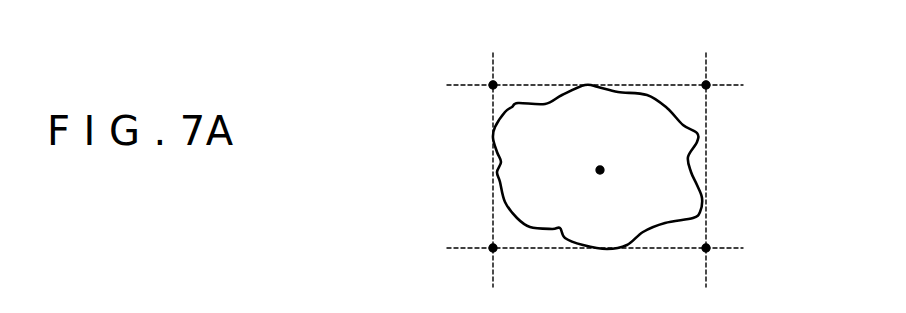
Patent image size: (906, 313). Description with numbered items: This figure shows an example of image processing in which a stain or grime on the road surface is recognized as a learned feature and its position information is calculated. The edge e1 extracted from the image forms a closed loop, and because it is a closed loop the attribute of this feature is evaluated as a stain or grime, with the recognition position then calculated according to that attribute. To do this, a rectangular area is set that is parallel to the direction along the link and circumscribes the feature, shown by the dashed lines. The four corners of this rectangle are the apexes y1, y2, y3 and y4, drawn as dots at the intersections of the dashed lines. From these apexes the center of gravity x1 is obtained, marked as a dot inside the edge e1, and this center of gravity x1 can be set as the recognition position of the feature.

The edge e1 is at (698, 130).
The center of gravity x1 is at (602, 166).
The apex y1 is at (496, 80).
The apex y2 is at (491, 246).
The apex y3 is at (707, 243).
The apex y4 is at (708, 79).